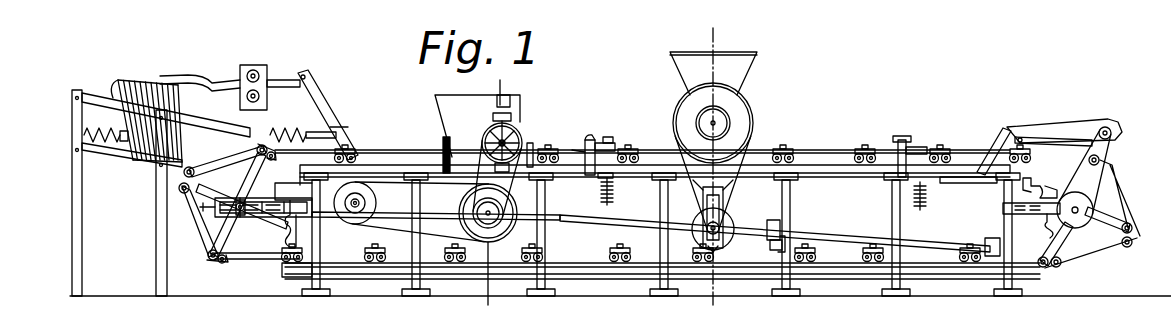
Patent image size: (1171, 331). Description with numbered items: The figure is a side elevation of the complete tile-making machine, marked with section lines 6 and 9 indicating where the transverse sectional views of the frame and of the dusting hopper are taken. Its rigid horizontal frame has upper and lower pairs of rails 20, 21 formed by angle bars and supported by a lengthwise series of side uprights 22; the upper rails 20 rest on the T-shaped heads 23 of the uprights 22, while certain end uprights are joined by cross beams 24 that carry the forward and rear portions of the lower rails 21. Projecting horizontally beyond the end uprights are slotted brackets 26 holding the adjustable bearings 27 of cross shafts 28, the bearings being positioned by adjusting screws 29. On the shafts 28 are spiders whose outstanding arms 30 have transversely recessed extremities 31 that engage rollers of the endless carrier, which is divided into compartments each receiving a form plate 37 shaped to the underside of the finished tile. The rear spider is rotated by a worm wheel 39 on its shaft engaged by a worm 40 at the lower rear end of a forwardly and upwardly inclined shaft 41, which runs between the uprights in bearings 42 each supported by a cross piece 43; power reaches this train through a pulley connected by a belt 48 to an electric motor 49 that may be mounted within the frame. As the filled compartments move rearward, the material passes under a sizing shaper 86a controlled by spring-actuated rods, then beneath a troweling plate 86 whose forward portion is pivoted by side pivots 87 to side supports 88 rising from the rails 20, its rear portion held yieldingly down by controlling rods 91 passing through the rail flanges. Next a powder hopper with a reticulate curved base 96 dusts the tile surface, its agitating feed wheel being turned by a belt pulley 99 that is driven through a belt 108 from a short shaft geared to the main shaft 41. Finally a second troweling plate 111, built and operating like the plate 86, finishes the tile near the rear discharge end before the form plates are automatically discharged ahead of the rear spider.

The section line 6- 6 is at (495, 192).
The section line 9- 9 is at (711, 168).
The upper rails 20 is at (640, 178).
The lower rails 21 is at (610, 272).
The side uprights 22 is at (320, 245).
The T-shaped heads 23 is at (302, 183).
The cross beams 24 is at (300, 275).
The slotted brackets 26 is at (241, 216).
The adjustable bearings 27 is at (239, 201).
The cross shafts 28 is at (208, 242).
The adjusting screws 29 is at (230, 209).
The spider arms 30 is at (216, 180).
The recessed extremities 31 is at (284, 254).
The form plate 37 is at (146, 109).
The worm wheel 39 is at (1048, 226).
The worm 40 is at (1068, 230).
The inclined shaft 41 is at (845, 240).
The bearings 42 is at (772, 220).
The cross piece 43 is at (770, 245).
The belt 48 is at (478, 200).
The electric motor 49 is at (350, 212).
The troweling plate 86 is at (610, 142).
The sizing shaper 86a is at (520, 140).
The side pivots 87 is at (590, 135).
The side supports 88 is at (583, 150).
The controlling rods 91 is at (582, 181).
The reticulate curved base 96 is at (742, 60).
The belt pulley 99 is at (738, 113).
The belt 108 is at (760, 154).
The second troweling plate 111 is at (908, 142).